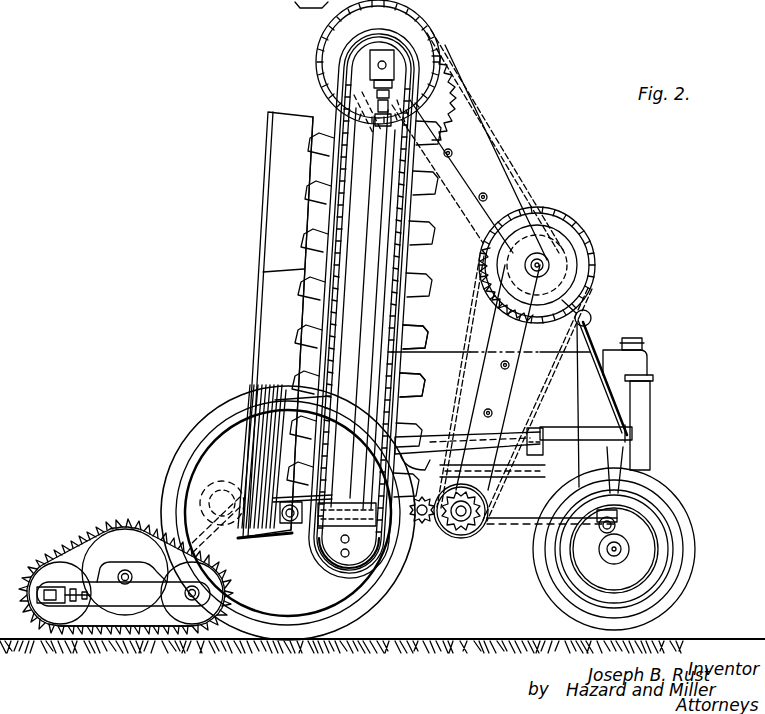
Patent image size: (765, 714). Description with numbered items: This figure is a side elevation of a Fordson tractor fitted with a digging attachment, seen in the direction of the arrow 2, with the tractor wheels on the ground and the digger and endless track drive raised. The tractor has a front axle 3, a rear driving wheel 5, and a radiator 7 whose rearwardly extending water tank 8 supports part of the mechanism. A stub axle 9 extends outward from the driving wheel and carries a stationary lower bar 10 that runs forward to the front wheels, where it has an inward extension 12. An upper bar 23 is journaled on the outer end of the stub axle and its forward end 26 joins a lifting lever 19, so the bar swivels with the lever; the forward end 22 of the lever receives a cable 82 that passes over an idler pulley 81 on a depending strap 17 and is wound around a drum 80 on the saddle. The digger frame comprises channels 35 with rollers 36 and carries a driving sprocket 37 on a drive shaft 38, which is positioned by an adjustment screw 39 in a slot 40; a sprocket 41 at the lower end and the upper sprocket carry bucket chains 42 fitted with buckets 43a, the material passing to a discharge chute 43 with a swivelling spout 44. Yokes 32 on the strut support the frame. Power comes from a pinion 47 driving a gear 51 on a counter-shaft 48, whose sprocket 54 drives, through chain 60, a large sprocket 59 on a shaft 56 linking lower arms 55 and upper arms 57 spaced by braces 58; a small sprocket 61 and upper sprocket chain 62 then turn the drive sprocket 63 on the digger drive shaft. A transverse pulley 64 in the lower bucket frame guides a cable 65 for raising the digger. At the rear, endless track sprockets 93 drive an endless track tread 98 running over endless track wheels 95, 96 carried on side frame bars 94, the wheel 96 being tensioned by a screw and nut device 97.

The engine 2 is at (552, 38).
The front axle 3 is at (629, 548).
The rear driving wheel 5 is at (212, 423).
The radiator 7 is at (640, 417).
The water tank 8 is at (369, 300).
The stub axle 9 is at (288, 523).
The stationary lower bar 10 is at (690, 265).
The inward extension 12 is at (125, 505).
The depending strap 17 is at (610, 370).
The lifting lever 19 is at (428, 443).
The forward end of lifting lever 22 is at (598, 450).
The upper bar 23 is at (513, 470).
The forward end of upper bar 26 is at (538, 433).
The yoke 32 is at (398, 353).
The channel 35 is at (395, 258).
The roller 36 is at (408, 397).
The driving sprocket 37 is at (412, 66).
The drive shaft 38 is at (372, 68).
The adjustment screw 39 is at (380, 113).
The slot 40 is at (343, 213).
The sprocket 41 is at (330, 567).
The bucket chain 42 is at (376, 578).
The discharge chute 43 is at (416, 292).
The bucket 43a is at (258, 358).
The swivelling spout 44 is at (305, 6).
The pinion 47 is at (417, 528).
The counter-shaft 48 is at (478, 530).
The gear 51 is at (488, 513).
The sprocket 54 is at (460, 543).
The arm 55 is at (513, 333).
The shaft 56 is at (553, 247).
The upper arm 57 is at (507, 157).
The brace 58 is at (467, 183).
The large sprocket 59 is at (587, 250).
The chain 60 is at (540, 408).
The small sprocket 61 is at (545, 250).
The upper sprocket chain 62 is at (500, 120).
The drive sprocket 63 is at (440, 62).
The transverse pulley 64 is at (350, 465).
The cable 65 is at (292, 402).
The drum 80 is at (592, 320).
The idler pulley 81 is at (619, 529).
The cable 82 is at (648, 353).
The endless track sprocket 93 is at (120, 540).
The side frame bar 94 is at (98, 585).
The endless track wheel 95 is at (197, 613).
The endless track wheel 96 is at (63, 613).
The screw and nut device 97 is at (83, 600).
The endless track tread 98 is at (63, 553).